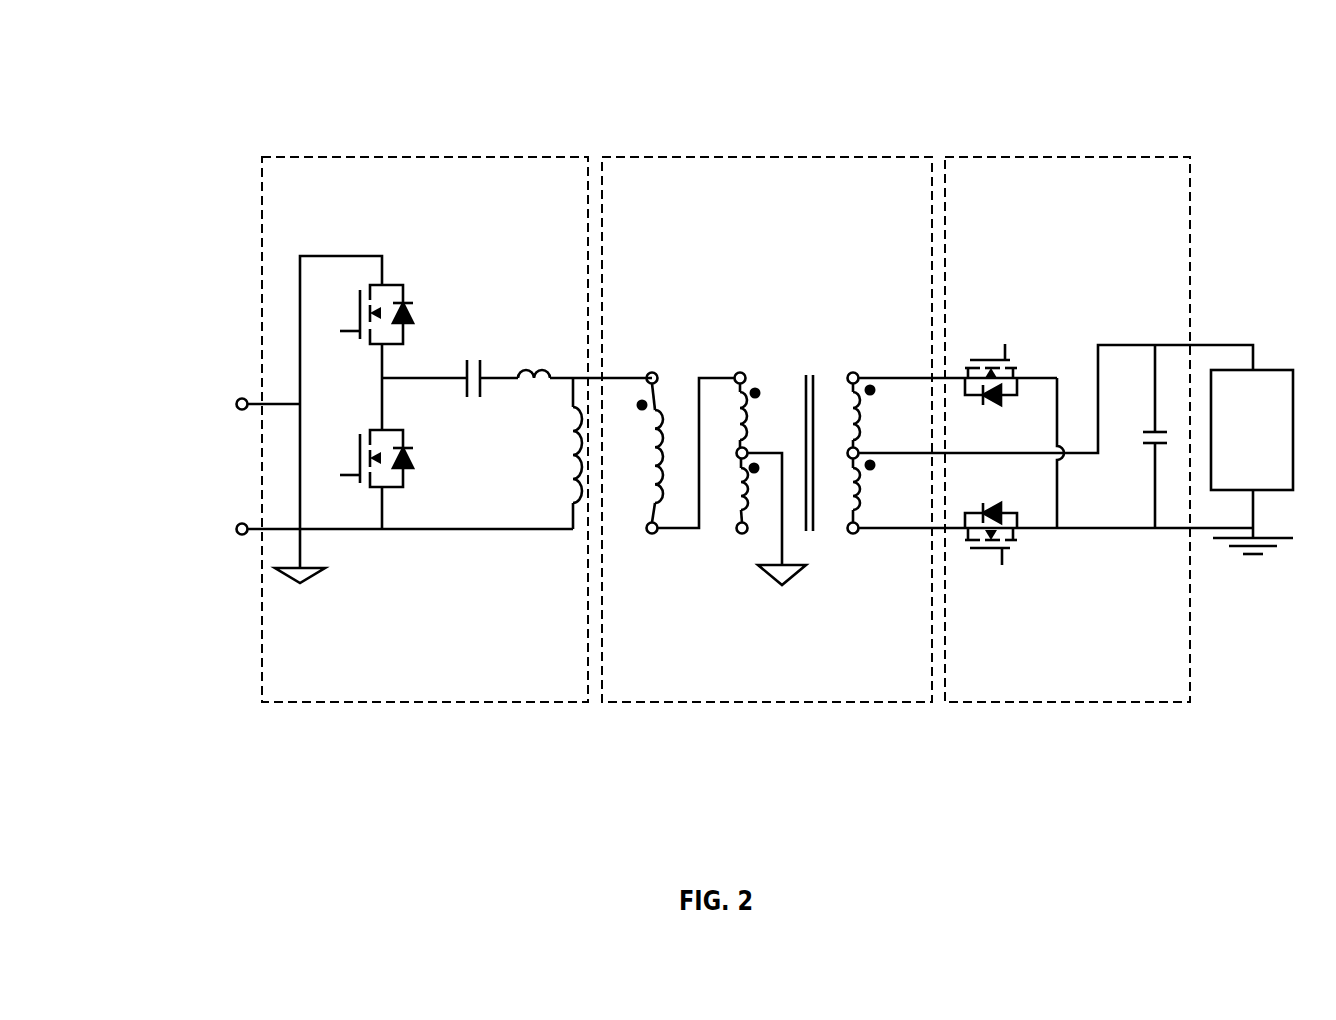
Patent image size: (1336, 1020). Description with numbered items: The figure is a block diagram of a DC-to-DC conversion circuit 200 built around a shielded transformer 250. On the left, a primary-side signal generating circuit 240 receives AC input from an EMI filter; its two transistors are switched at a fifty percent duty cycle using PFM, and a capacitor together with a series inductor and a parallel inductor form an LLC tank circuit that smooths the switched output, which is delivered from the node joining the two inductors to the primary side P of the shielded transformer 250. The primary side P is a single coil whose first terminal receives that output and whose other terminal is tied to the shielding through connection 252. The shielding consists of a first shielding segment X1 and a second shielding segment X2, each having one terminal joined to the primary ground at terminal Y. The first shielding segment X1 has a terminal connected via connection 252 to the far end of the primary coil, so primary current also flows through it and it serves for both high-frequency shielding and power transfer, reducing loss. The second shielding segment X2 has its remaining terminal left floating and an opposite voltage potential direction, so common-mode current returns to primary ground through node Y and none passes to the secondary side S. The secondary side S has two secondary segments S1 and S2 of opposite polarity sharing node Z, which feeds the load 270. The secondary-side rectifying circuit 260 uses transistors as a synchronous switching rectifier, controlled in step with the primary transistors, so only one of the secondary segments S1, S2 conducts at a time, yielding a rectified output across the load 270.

The DC-to-DC conversion circuit 200 is at (218, 87).
The primary-side signal generating circuit 240 is at (576, 695).
The shielded transformer 250 is at (911, 691).
The connection 252 is at (698, 376).
The secondary-side rectifying circuit 260 is at (1180, 693).
The load 270 is at (1271, 483).
The primary side P is at (661, 342).
The secondary side S is at (853, 342).
The first shielding segment X1 is at (763, 418).
The second shielding segment X2 is at (728, 508).
The first secondary segment S1 is at (864, 411).
The second secondary segment S2 is at (836, 511).